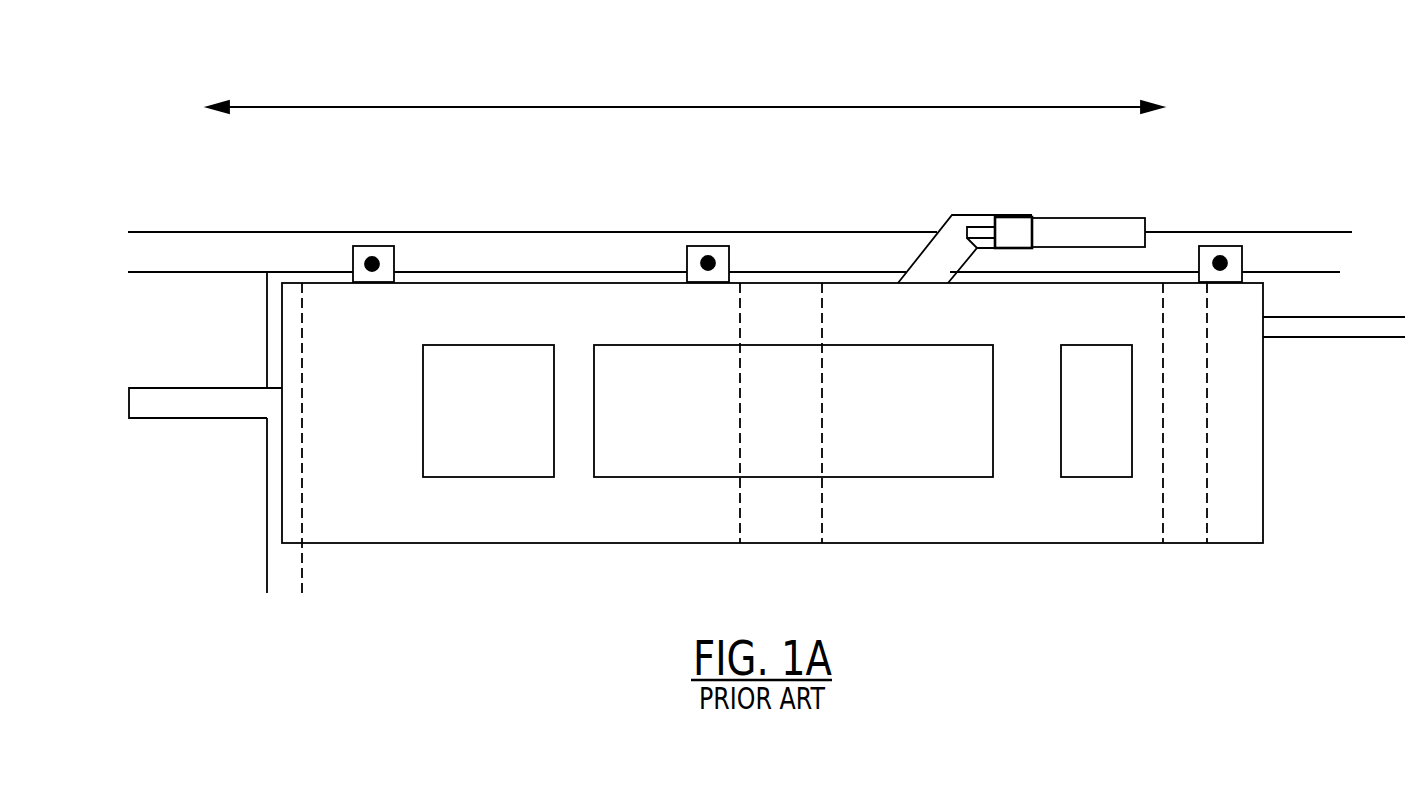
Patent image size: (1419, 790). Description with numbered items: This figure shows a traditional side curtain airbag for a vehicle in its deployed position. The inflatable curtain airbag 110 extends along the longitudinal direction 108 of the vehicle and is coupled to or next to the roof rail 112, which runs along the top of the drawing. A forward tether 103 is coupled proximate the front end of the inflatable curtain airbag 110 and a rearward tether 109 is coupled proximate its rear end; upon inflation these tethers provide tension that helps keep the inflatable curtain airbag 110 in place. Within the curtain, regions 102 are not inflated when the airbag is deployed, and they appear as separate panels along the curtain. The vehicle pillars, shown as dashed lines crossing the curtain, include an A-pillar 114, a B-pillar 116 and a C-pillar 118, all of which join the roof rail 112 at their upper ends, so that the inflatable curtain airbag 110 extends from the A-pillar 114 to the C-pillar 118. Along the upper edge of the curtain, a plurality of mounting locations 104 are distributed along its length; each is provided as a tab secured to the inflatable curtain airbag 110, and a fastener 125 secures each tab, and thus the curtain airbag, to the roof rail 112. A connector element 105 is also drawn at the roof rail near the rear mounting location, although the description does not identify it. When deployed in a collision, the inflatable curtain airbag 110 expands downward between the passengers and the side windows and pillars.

The regions 102 is at (502, 427).
The forward tether 103 is at (195, 398).
The mounting location 104 is at (385, 267).
The plug connector 105 is at (1085, 235).
The longitudinal direction 108 is at (525, 107).
The rearward tether 109 is at (1365, 316).
The inflatable curtain airbag 110 is at (850, 195).
The roof rail 112 is at (240, 231).
The A-pillar 114 is at (302, 337).
The B-pillar 116 is at (822, 324).
The C-pillar 118 is at (1208, 322).
The fastener 125 is at (368, 257).